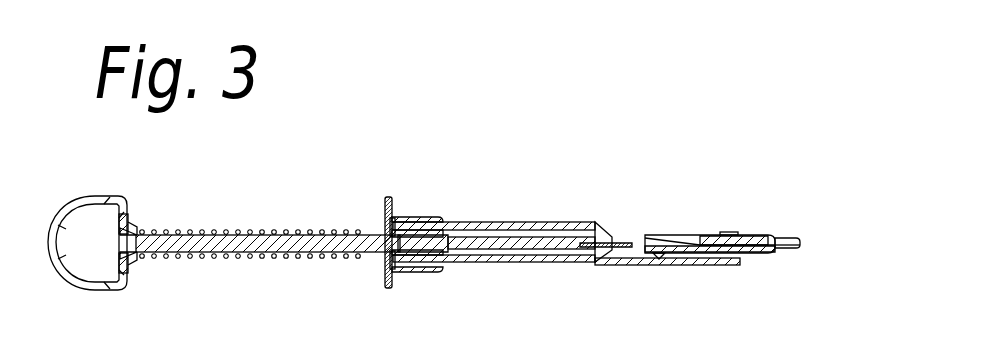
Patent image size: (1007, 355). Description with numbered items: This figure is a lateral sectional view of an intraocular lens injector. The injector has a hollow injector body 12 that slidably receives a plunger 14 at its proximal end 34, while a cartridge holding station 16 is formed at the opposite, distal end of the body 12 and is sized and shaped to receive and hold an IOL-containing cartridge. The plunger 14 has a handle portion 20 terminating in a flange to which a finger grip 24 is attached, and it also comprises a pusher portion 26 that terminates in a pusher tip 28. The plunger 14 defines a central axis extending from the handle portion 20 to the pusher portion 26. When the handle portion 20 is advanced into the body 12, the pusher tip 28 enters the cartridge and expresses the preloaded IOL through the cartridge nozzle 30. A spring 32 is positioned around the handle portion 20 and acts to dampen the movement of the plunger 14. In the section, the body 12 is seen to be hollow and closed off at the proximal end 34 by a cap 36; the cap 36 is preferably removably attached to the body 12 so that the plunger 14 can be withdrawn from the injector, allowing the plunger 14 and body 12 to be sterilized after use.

The injector body 12 is at (558, 263).
The plunger 14 is at (326, 236).
The cartridge holding station 16 is at (735, 235).
The handle portion 20 is at (264, 233).
The finger grip 24 is at (75, 198).
The pusher portion 26 is at (540, 222).
The pusher tip 28 is at (632, 245).
The cartridge nozzle 30 is at (800, 240).
The spring 32 is at (190, 259).
The proximal end 34 is at (385, 263).
The cap 36 is at (410, 216).